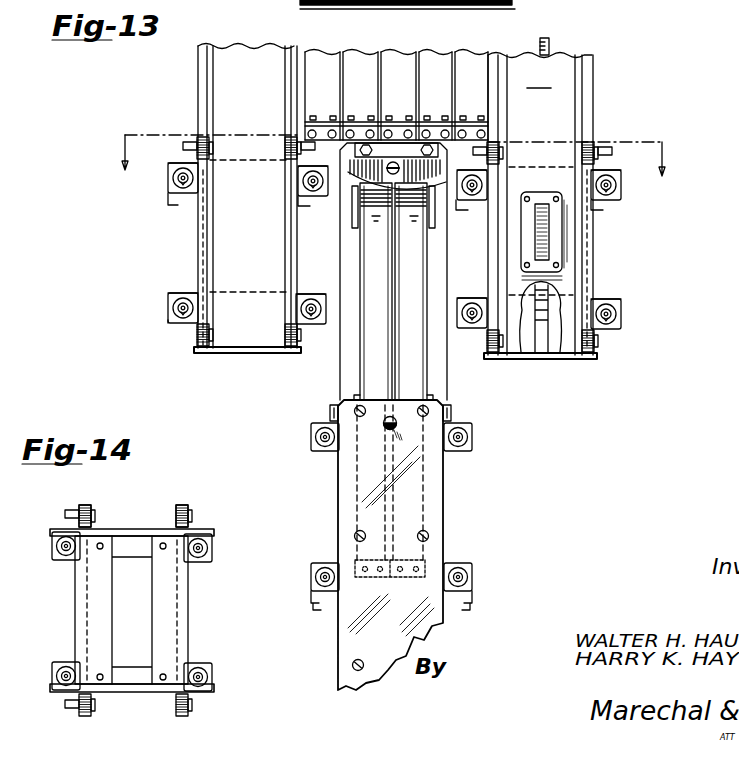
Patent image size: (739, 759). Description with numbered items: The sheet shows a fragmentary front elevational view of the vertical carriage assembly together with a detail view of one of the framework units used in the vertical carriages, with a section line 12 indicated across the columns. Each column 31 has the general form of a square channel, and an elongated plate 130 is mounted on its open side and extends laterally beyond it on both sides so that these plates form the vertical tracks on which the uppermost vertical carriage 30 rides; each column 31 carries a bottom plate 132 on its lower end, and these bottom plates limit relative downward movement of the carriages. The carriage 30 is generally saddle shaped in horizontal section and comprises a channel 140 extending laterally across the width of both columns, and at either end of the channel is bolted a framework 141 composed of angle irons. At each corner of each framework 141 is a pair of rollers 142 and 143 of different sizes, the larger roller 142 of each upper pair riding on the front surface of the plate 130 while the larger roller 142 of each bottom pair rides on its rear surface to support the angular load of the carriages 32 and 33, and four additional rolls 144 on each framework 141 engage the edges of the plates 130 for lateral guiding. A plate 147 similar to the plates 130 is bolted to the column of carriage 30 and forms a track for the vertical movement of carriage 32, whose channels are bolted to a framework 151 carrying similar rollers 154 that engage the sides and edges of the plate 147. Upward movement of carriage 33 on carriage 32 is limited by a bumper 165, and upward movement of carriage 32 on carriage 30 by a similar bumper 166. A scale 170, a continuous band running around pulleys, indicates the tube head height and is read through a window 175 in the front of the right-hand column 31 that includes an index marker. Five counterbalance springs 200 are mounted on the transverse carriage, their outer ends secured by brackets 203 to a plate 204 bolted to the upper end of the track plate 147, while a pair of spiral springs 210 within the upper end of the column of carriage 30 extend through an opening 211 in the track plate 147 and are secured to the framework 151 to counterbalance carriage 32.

In FIG. 13, the section line 12 is at (392, 142).
In FIG. 13, the vertical carriage 30 is at (321, 400).
In FIG. 13, the column 31 is at (252, 84).
In FIG. 13, the carriage 32 is at (456, 511).
In FIG. 13, the carriage 33 is at (473, 16).
In FIG. 13, the elongated plate 130 is at (397, 200).
In FIG. 13, the bottom plate 132 is at (214, 356).
In FIG. 13, the channel 140 is at (308, 215).
In FIG. 14, the framework 141 is at (208, 621).
In FIG. 13, the roller 142 is at (290, 338).
In FIG. 14, the roller 142 is at (180, 505).
In FIG. 13, the roller 143 is at (288, 136).
In FIG. 14, the roller 143 is at (178, 522).
In FIG. 13, the roll 144 is at (298, 180).
In FIG. 14, the roll 144 is at (62, 560).
In FIG. 13, the plate 147 is at (446, 380).
In FIG. 13, the framework 151 is at (470, 425).
In FIG. 13, the roller 154 is at (310, 442).
In FIG. 13, the bumper 165 is at (386, 428).
In FIG. 13, the bumper 166 is at (400, 172).
In FIG. 13, the scale 170 is at (550, 43).
In FIG. 13, the window 175 is at (548, 242).
In FIG. 13, the spring 200 is at (396, 75).
In FIG. 13, the bracket 203 is at (396, 75).
In FIG. 13, the plate 204 is at (420, 135).
In FIG. 13, the spiral spring 210 is at (410, 340).
In FIG. 13, the opening 211 is at (356, 236).